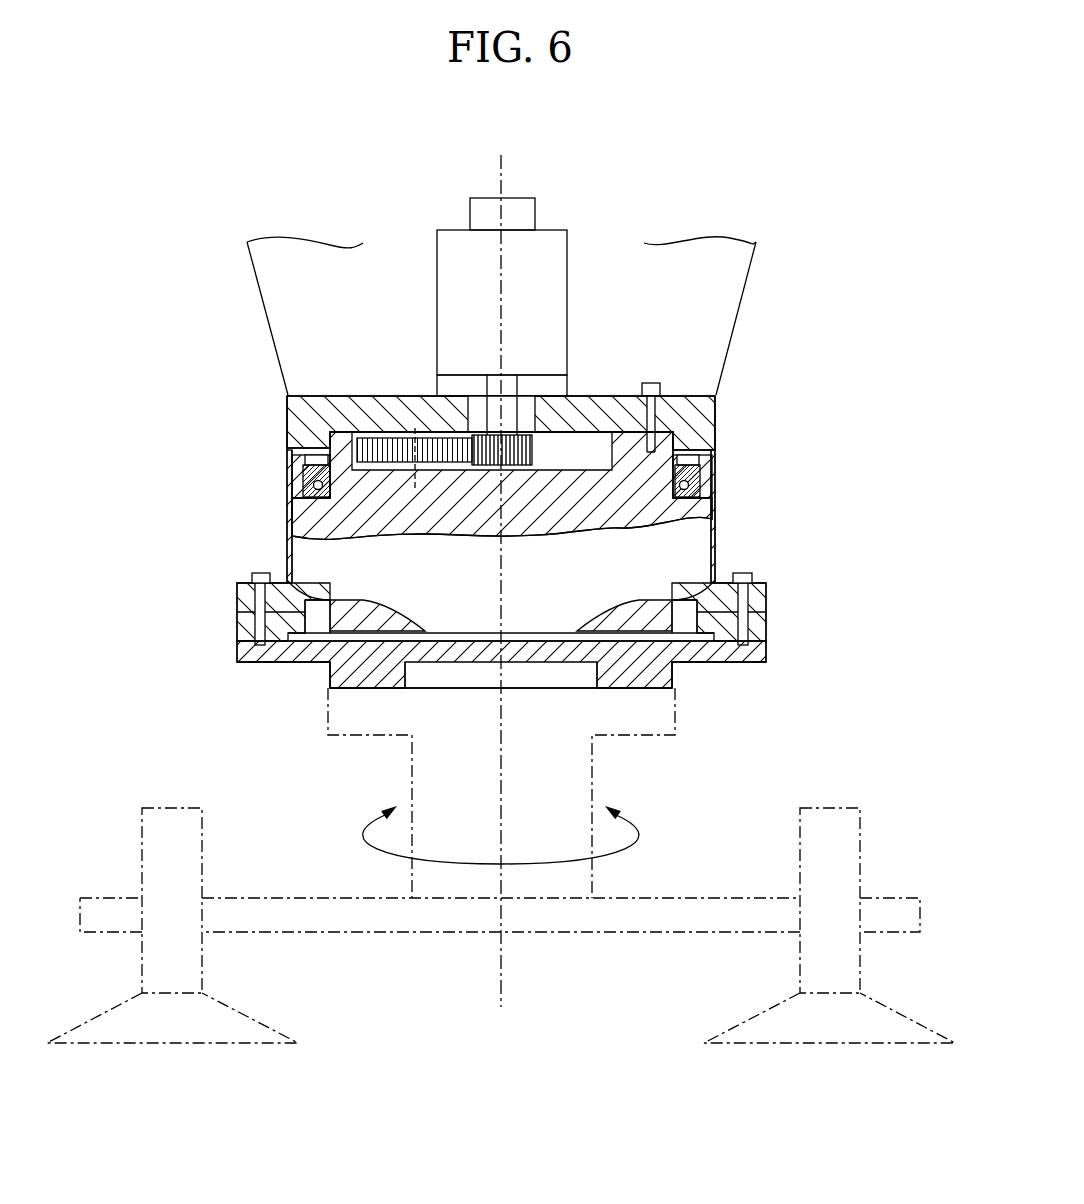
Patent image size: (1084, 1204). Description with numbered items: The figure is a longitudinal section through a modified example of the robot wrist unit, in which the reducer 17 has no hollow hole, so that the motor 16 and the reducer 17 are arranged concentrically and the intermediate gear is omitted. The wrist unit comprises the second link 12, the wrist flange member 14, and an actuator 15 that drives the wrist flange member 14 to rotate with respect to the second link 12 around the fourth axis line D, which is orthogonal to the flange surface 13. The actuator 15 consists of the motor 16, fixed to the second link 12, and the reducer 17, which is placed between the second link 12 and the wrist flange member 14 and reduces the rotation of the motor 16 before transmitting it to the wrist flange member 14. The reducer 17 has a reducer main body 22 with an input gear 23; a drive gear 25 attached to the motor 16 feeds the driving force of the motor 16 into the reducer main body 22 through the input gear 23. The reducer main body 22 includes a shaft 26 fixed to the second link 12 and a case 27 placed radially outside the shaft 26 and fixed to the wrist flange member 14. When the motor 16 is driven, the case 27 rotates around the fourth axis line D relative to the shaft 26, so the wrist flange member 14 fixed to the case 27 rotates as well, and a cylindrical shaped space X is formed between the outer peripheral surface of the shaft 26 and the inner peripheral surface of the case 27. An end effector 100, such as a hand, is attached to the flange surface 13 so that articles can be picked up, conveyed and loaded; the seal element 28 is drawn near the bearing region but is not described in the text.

The second link 12 is at (745, 303).
The flange surface 13 is at (615, 688).
The wrist flange member 14 is at (346, 705).
The actuator 15 is at (188, 282).
The motor 16 is at (435, 289).
The reducer 17 is at (268, 446).
The reducer main body 22 is at (275, 503).
The input gear 23 is at (386, 436).
The drive gear 25 is at (533, 452).
The shaft 26 is at (632, 633).
The case 27 is at (717, 512).
The seal 28 is at (690, 465).
The cylindrical shaped space X is at (692, 502).
The fourth axis line D is at (503, 768).
The end effector 100 is at (575, 949).